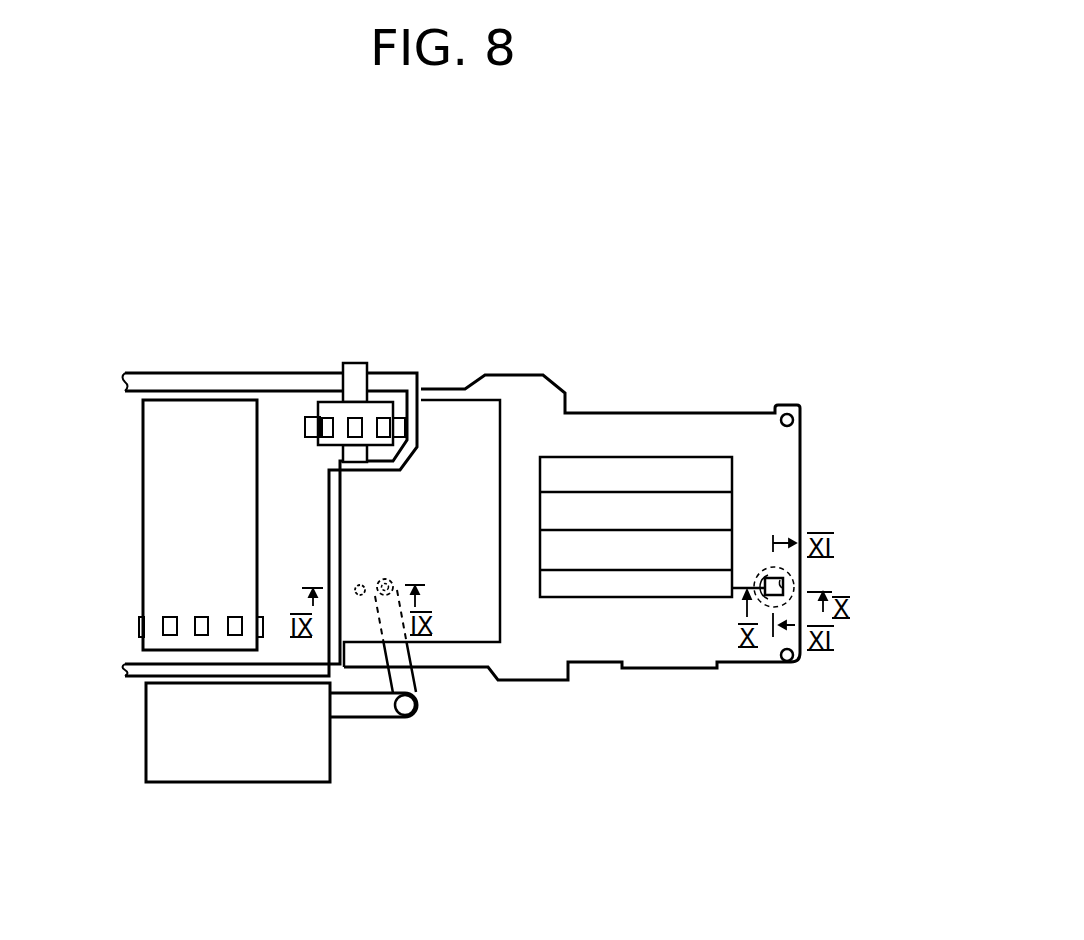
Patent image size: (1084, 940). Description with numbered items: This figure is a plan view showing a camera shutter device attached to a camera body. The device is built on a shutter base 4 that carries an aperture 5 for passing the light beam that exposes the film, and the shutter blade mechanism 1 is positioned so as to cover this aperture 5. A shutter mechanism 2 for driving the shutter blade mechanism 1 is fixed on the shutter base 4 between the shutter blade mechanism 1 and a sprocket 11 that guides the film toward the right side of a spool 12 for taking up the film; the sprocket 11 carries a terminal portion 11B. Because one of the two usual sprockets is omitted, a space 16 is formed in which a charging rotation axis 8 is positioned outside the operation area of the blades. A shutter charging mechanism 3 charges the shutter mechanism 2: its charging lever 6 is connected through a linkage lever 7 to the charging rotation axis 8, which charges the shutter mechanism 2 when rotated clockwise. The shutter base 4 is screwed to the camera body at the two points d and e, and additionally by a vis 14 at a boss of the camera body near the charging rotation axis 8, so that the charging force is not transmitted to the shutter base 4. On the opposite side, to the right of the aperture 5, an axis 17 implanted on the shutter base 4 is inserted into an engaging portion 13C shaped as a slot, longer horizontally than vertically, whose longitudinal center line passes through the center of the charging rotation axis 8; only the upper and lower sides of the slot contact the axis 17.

The shutter blade mechanism 1 is at (657, 572).
The shutter mechanism 2 is at (477, 642).
The shutter charging mechanism 3 is at (180, 784).
The shutter base 4 is at (690, 413).
The aperture 5 is at (623, 457).
The charging lever 6 is at (387, 712).
The linkage lever 7 is at (415, 685).
The charging rotation axis 8 is at (391, 578).
The sprocket 11 is at (382, 405).
The connector terminal 11B is at (305, 417).
The spool 12 is at (162, 532).
The engaging portion 13C is at (790, 580).
The vis 14 is at (359, 596).
The space 16 is at (357, 532).
The axis 17 is at (770, 592).
The screw point d is at (800, 417).
The screw point e is at (793, 667).